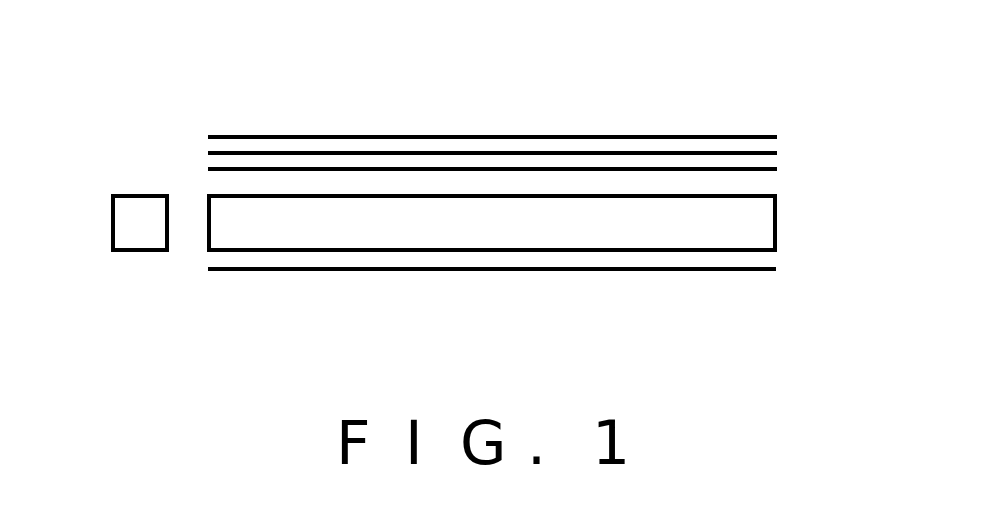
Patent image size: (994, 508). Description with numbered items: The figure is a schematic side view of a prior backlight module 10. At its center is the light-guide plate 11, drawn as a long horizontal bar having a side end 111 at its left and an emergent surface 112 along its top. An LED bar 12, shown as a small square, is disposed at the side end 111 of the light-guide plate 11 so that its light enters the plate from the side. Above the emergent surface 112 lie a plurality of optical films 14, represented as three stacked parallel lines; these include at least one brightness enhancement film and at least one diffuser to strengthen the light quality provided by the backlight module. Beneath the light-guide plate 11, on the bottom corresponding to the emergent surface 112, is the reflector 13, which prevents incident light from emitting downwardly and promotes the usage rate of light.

The backlight module 10 is at (782, 52).
The light-guide plate 11 is at (778, 229).
The side end 111 is at (208, 243).
The emergent surface 112 is at (764, 197).
The LED bar 12 is at (119, 236).
The reflector 13 is at (760, 272).
The optical films 14 is at (785, 138).